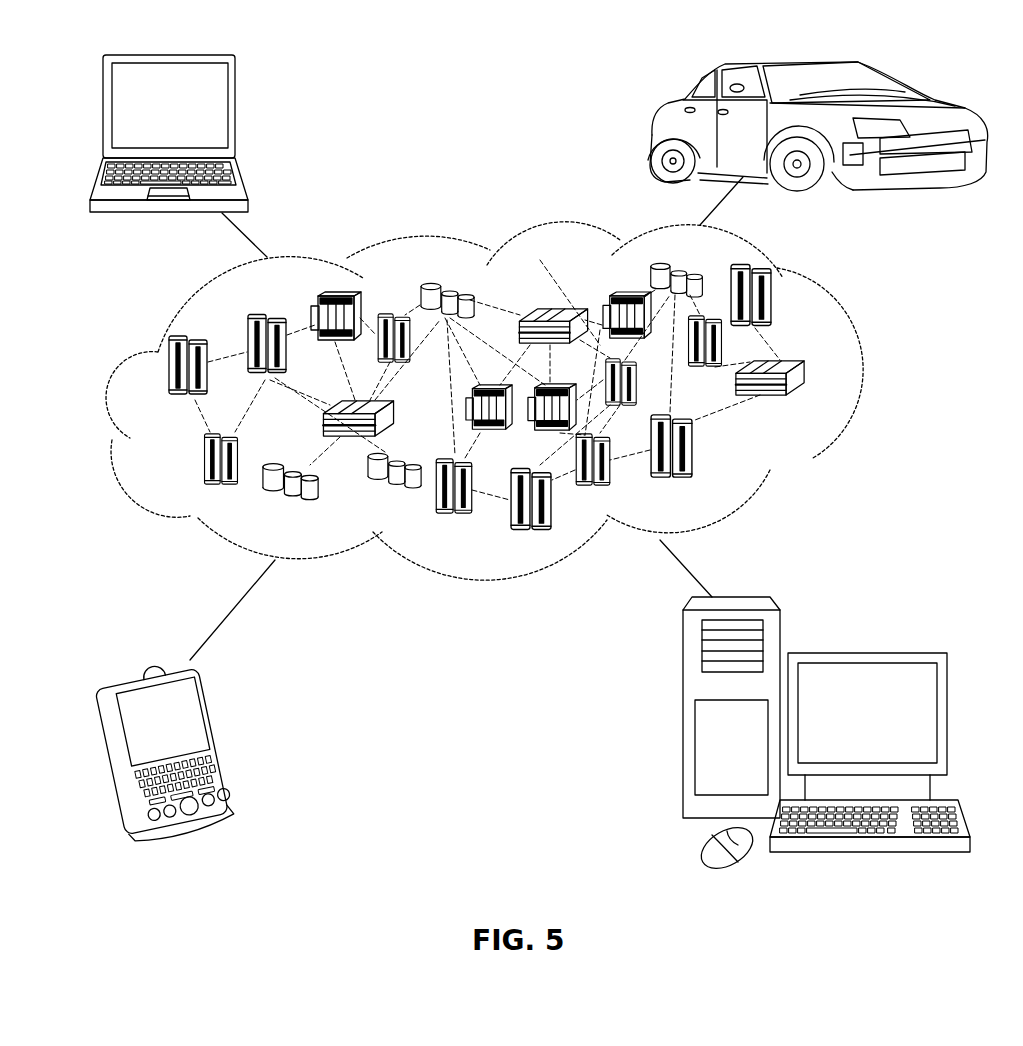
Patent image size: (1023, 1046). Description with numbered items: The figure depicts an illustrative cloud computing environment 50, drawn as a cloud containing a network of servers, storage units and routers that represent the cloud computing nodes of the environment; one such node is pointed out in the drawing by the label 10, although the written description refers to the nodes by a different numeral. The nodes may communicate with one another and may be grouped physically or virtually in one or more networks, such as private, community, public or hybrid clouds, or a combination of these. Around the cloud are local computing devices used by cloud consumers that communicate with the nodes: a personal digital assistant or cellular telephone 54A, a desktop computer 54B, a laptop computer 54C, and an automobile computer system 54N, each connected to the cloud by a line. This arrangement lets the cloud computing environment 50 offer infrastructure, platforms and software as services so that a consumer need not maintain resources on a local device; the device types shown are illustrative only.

The cloud computing node 10 is at (814, 407).
The cloud computing environment 50 is at (514, 401).
The personal digital assistant (PDA) or cellular telephone 54A is at (228, 737).
The desktop computer 54B is at (865, 652).
The laptop computer 54C is at (236, 115).
The automobile computer system 54N is at (654, 132).